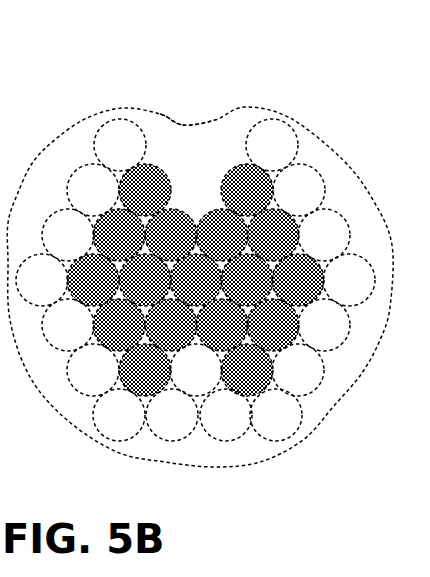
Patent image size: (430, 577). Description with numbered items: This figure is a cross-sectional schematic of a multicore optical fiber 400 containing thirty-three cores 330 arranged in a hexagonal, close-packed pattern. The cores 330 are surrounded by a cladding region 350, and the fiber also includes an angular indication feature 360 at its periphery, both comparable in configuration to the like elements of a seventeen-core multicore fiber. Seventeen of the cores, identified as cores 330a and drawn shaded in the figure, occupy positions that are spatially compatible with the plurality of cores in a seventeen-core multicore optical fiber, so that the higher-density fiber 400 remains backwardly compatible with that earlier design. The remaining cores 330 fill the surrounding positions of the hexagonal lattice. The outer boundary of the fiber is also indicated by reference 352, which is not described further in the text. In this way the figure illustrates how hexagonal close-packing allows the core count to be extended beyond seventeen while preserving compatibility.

The multicore optical fiber 400 is at (200, 287).
The outer jacket 352 is at (115, 452).
The angular indication feature 360 is at (190, 103).
The cladding region 350 is at (187, 153).
The cores 330 is at (240, 373).
The spatially compatible cores 330a is at (147, 373).